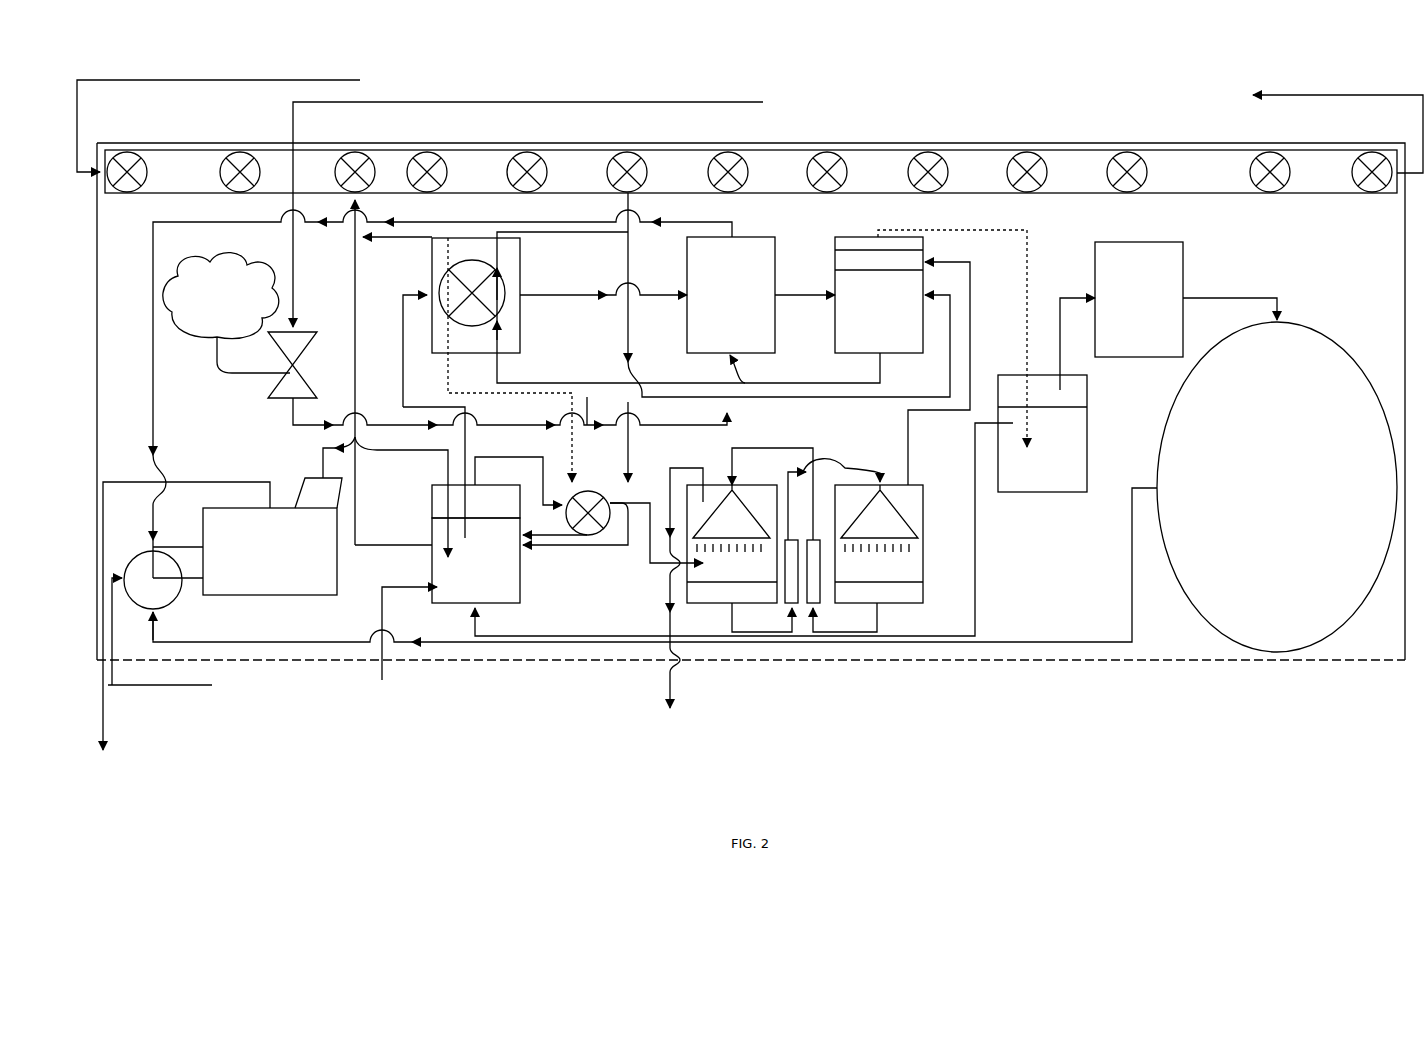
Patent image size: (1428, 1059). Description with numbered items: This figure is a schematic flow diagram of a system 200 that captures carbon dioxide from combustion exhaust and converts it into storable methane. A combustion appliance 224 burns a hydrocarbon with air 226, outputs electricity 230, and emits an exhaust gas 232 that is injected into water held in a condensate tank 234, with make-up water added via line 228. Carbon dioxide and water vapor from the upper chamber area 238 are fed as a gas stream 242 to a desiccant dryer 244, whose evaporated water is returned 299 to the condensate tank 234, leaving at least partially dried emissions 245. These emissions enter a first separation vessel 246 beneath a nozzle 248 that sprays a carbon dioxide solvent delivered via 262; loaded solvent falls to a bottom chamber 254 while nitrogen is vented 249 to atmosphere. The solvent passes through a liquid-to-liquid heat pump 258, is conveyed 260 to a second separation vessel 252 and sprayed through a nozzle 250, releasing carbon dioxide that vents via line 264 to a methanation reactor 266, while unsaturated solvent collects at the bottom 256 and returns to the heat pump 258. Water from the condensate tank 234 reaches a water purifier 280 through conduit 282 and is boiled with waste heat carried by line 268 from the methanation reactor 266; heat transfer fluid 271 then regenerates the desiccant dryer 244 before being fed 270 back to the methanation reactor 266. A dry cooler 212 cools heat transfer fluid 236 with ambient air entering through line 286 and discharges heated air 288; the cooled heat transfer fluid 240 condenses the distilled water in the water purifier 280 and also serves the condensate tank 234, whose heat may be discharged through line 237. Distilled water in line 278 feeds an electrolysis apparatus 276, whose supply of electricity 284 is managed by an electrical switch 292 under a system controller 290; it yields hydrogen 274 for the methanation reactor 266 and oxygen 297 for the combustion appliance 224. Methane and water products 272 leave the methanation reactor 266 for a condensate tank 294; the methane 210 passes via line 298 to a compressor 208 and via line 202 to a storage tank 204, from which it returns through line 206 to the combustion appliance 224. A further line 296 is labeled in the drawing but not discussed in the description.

The system 200 is at (1230, 692).
The line 202 is at (1230, 310).
The storage tank 204 is at (1277, 487).
The line 206 is at (655, 565).
The compressor 208 is at (1139, 299).
The methane 210 is at (1042, 399).
The dry cooler 212 is at (751, 171).
The combustion appliance 224 is at (233, 559).
The air 226 is at (176, 636).
The line 228 is at (405, 639).
The electricity 230 is at (183, 621).
The exhaust gas 232 is at (385, 497).
The condensate tank 234 is at (476, 560).
The heat transfer fluid 236 is at (397, 246).
The line 237 is at (393, 535).
The upper chamber area 238 is at (476, 501).
The cooled heat transfer fluid 240 is at (506, 369).
The gas stream 242 is at (518, 481).
The desiccant dryer 244 is at (634, 514).
The at least partially dried emissions 245 is at (669, 540).
The first separation vessel 246 is at (732, 544).
The nozzle 248 is at (731, 511).
The vent 249 is at (667, 676).
The nozzle 250 is at (879, 511).
The second separation vessel 252 is at (879, 544).
The bottom chamber 254 is at (739, 607).
The bottom 256 is at (868, 607).
The liquid-to-liquid heat pump 258 is at (803, 570).
The conveyance line 260 is at (834, 498).
The conveyance line 262 is at (772, 494).
The line 264 is at (939, 373).
The methanation reactor 266 is at (879, 295).
The line 268 is at (688, 307).
The heat transfer fluid 270 is at (768, 360).
The heat transfer fluid 271 is at (510, 360).
The line 272 is at (952, 338).
The hydrogen 274 is at (805, 306).
The electrolysis apparatus 276 is at (731, 295).
The line 278 is at (603, 299).
The water purifier 280 is at (476, 295).
The conduit 282 is at (434, 416).
The supply of electricity 284 is at (547, 211).
The line 286 is at (235, 123).
The discharge 288 is at (1321, 130).
The system controller 290 is at (226, 313).
The electrical switch 292 is at (488, 378).
The condensate tank 294 is at (1042, 433).
The line 296 is at (744, 529).
The oxygen 297 is at (442, 391).
The line 298 is at (1077, 344).
The feed line 299 is at (575, 524).